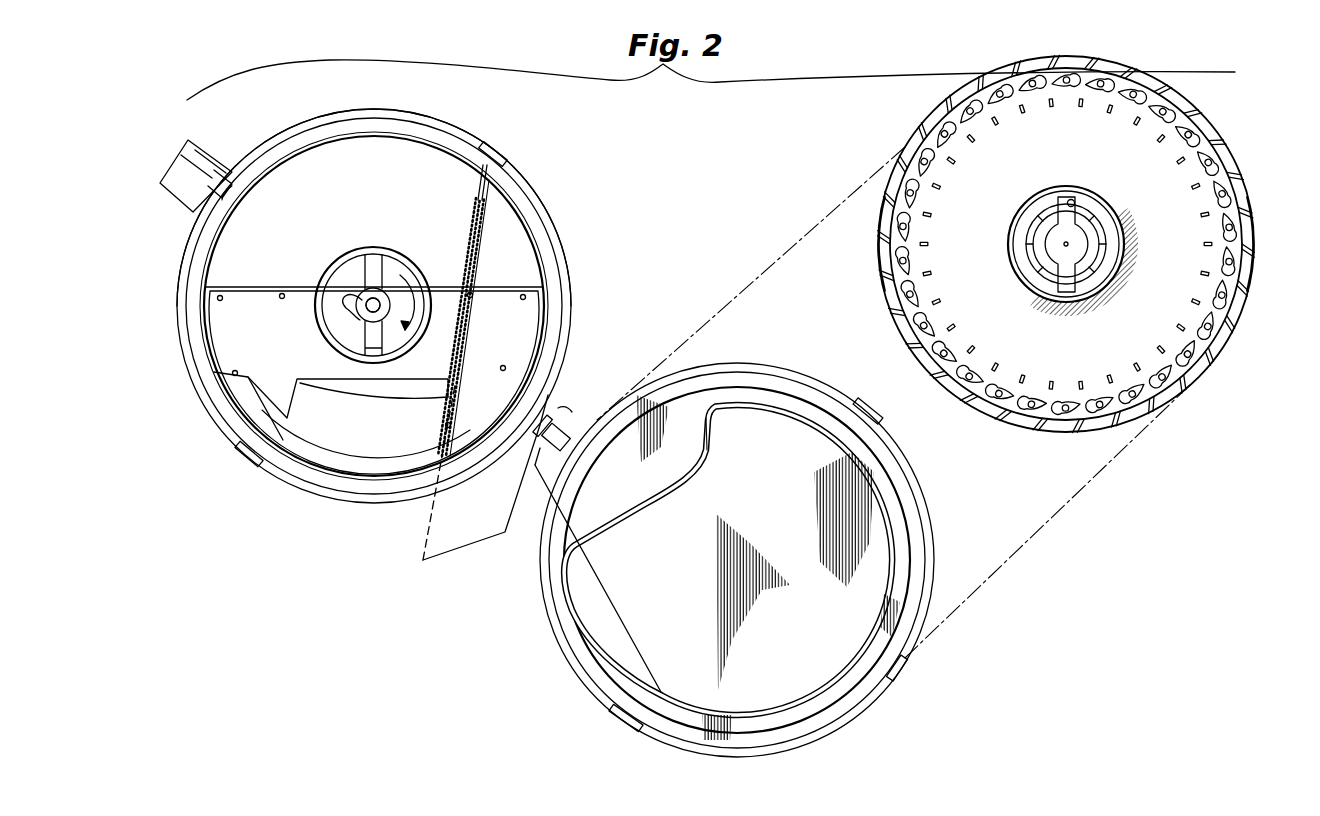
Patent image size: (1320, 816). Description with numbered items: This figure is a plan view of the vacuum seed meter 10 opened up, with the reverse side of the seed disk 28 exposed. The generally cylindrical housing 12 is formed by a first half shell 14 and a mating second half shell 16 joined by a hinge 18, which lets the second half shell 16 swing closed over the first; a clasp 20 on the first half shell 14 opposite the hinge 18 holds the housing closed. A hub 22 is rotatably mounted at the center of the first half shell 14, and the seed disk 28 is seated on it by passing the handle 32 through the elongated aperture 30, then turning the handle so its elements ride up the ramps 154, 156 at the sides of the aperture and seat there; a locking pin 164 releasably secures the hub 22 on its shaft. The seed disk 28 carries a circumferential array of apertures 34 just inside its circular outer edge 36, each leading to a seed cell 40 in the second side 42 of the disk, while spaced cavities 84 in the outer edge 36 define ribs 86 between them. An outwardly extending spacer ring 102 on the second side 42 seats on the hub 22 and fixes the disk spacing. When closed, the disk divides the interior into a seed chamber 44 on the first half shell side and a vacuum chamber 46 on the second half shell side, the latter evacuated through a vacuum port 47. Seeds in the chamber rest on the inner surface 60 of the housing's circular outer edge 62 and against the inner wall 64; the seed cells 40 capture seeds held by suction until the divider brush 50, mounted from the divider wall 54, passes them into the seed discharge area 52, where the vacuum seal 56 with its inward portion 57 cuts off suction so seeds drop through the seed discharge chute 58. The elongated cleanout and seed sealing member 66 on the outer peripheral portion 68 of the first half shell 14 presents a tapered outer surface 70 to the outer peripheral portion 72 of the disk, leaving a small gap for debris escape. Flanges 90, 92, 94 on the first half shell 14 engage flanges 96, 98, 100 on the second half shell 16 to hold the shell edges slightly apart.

The vacuum seed meter 10 is at (670, 290).
The cylindrical housing 12 is at (674, 370).
The first half shell 14 is at (430, 118).
The second half shell 16 is at (815, 690).
The hinge 18 is at (572, 410).
The clasp 20 is at (168, 150).
The hub 22 is at (318, 320).
The seed disk 28 is at (1160, 410).
The elongated aperture 30 is at (1071, 200).
The handle 32 is at (373, 256).
The apertures 34 is at (918, 160).
The circular outer edge 36 is at (1063, 433).
The seed cells 40 is at (942, 118).
The second side 42 is at (895, 228).
The seed chamber 44 is at (331, 396).
The vacuum chamber 46 is at (768, 567).
The vacuum port 47 is at (613, 624).
The divider brush 50 is at (474, 205).
The seed discharge area 52 is at (517, 243).
The divider wall 54 is at (472, 230).
The vacuum seal 56 is at (646, 509).
The portion of the vacuum seal 57 is at (704, 462).
The seed discharge chute 58 is at (450, 547).
The inner surface 60 is at (322, 462).
The circular outer edge 62 is at (732, 758).
The inner wall 64 is at (374, 382).
The cleanout and seed sealing member 66 is at (210, 374).
The outer peripheral portion 68 is at (523, 195).
The outer surface 70 is at (184, 256).
The outer peripheral portion 72 is at (1250, 212).
The cavities 84 is at (380, 300).
The ribs 86 is at (1247, 312).
The flange 90 is at (224, 190).
The flange 92 is at (497, 148).
The flange 94 is at (246, 462).
The flange 96 is at (903, 674).
The intermediate flange 98 is at (870, 400).
The intermediate flange 100 is at (628, 725).
The spacer ring 102 is at (1020, 278).
The ramp 154 is at (1107, 242).
The ramp 156 is at (1026, 244).
The locking pin 164 is at (350, 292).